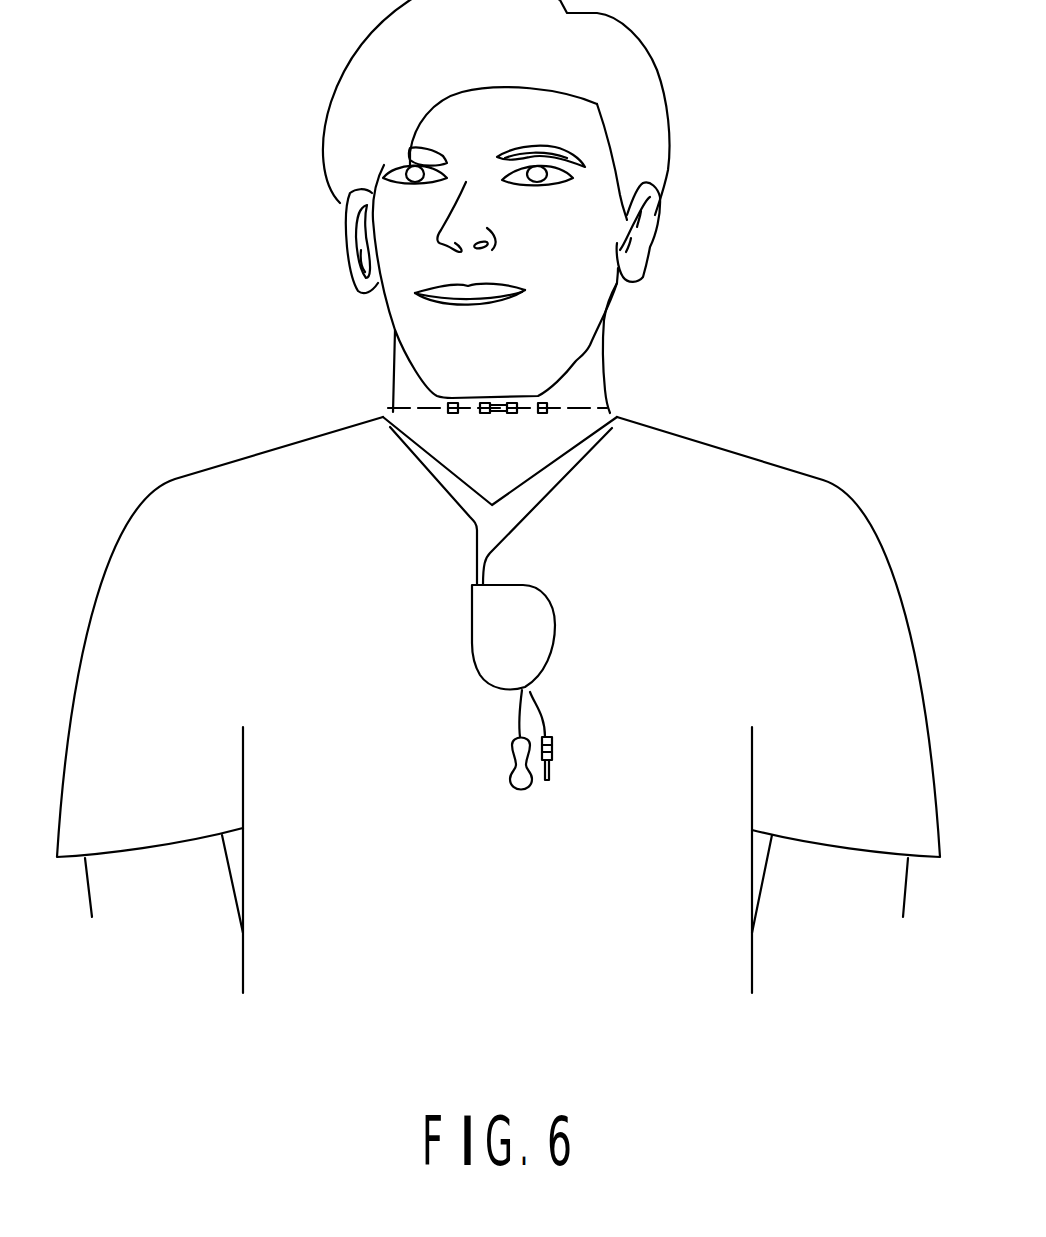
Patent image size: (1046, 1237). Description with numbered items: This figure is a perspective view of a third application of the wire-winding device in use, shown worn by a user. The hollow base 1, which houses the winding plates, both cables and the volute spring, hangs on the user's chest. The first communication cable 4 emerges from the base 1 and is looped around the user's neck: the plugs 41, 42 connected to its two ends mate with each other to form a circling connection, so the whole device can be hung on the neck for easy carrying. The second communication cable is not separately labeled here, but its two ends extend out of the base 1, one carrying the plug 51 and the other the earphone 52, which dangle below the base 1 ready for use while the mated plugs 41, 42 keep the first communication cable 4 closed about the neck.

The base 1 is at (457, 633).
The first communication cable 4 is at (557, 485).
The plug 41 is at (452, 403).
The plug 42 is at (545, 404).
The plug 51 is at (553, 750).
The earphone 52 is at (516, 762).